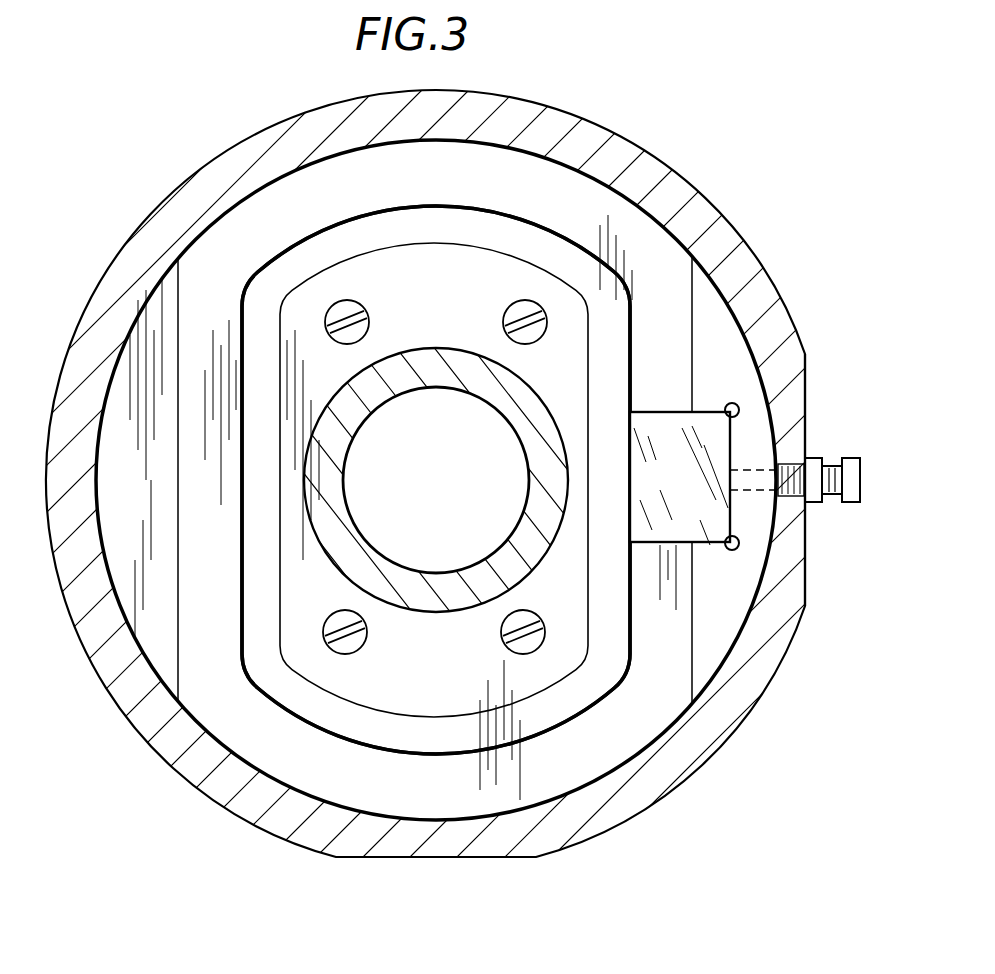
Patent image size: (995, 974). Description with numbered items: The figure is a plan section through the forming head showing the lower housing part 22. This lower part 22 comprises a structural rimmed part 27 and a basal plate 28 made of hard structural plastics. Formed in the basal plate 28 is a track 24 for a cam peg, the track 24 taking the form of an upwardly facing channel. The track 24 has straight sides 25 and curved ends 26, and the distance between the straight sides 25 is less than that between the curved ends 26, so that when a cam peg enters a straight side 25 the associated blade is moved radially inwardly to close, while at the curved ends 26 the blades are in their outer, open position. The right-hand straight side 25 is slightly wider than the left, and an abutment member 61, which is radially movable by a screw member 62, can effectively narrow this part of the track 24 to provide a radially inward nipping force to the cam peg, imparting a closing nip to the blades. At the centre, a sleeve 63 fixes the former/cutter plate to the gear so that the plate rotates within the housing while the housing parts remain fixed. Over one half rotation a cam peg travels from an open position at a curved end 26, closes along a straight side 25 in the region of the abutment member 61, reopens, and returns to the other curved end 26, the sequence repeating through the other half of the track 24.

The lower housing part 22 is at (158, 348).
The track 24 is at (366, 237).
The straight sides 25 is at (628, 380).
The curved ends 26 is at (436, 208).
The structural rimmed part 27 is at (706, 722).
The basal plate 28 is at (598, 748).
The abutment member 61 is at (672, 463).
The screw member 62 is at (825, 498).
The sleeve 63 is at (416, 370).